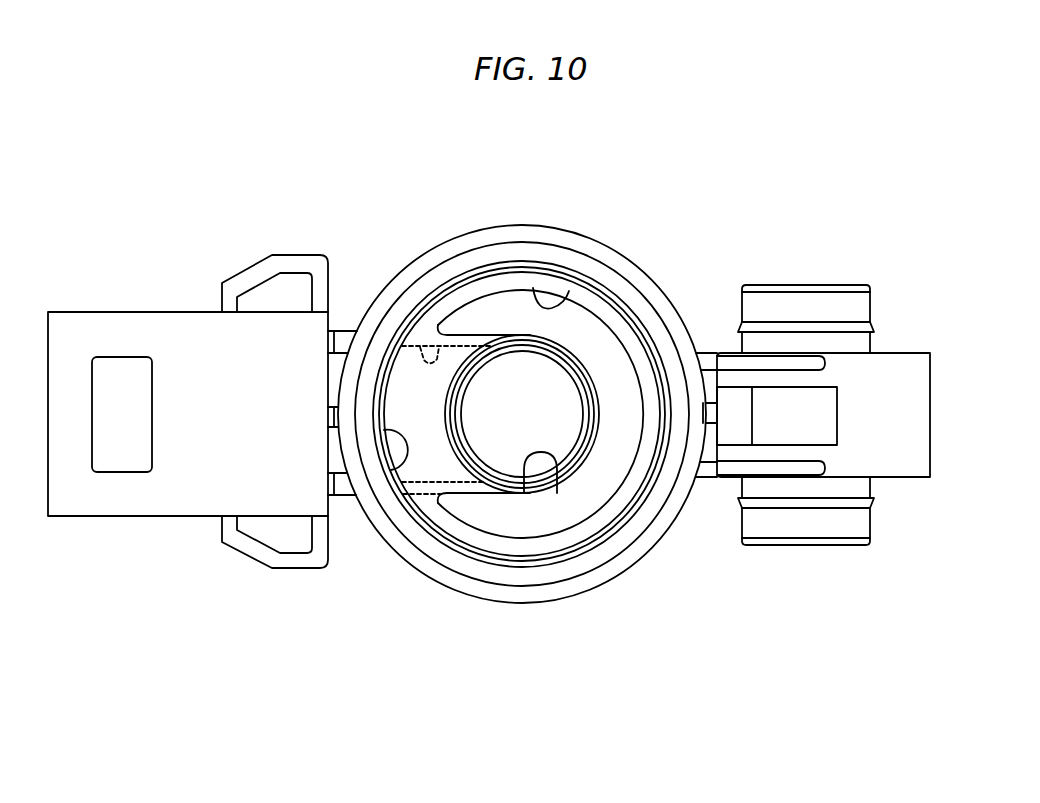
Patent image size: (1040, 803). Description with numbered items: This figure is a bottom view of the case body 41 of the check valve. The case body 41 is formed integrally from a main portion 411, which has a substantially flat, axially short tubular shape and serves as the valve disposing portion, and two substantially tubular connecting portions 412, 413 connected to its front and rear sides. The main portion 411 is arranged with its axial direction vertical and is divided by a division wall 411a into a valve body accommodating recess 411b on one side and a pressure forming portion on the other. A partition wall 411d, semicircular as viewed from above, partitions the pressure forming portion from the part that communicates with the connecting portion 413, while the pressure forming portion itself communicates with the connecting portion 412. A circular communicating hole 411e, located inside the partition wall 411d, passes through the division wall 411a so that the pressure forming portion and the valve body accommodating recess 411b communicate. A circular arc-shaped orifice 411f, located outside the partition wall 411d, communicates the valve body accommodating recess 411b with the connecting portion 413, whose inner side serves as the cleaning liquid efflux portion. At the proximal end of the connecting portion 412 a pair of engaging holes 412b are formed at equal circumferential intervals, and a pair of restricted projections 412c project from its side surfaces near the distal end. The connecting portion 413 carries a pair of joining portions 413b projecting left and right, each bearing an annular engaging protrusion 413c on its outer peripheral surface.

The case body 41 is at (463, 227).
The main portion 411 is at (627, 263).
The division wall 411a is at (470, 494).
The valve body accommodating recess 411b is at (401, 434).
The partition wall 411d is at (421, 348).
The communicating hole 411e is at (544, 452).
The orifice 411f is at (568, 300).
The connecting portion 412 is at (171, 500).
The engaging holes 412b is at (93, 434).
The restricted projections 412c is at (263, 264).
The connecting portion 413 is at (910, 418).
The joining portions 413b is at (855, 302).
The engaging protrusion 413c is at (800, 322).